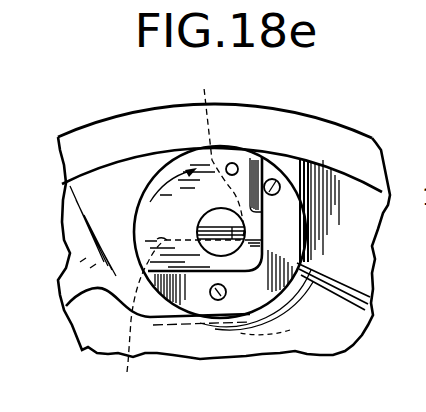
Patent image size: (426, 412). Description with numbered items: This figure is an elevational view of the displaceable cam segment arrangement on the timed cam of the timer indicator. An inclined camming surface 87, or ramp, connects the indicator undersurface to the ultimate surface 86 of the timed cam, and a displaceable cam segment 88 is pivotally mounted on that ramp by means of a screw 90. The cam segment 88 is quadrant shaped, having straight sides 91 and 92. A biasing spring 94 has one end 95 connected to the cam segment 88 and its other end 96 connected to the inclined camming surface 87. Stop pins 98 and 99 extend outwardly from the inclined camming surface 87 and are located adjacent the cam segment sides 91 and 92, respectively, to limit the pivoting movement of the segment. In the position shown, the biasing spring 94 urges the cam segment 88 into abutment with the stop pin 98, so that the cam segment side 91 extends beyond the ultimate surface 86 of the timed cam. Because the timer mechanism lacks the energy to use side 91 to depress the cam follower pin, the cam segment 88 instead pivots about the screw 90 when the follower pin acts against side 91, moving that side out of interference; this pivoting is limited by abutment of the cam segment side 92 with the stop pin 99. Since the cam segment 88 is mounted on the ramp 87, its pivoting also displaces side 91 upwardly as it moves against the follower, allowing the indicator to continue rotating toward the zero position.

The ultimate surface 86 is at (333, 236).
The inclined camming surface 87 is at (128, 252).
The cam segment 88 is at (198, 220).
The screw 90 is at (140, 207).
The straight side 91 is at (300, 210).
The straight side 92 is at (200, 273).
The biasing spring 94 is at (204, 153).
The spring end 95 is at (233, 163).
The spring end 96 is at (136, 316).
The stop pin 98 is at (275, 179).
The stop pin 99 is at (226, 299).